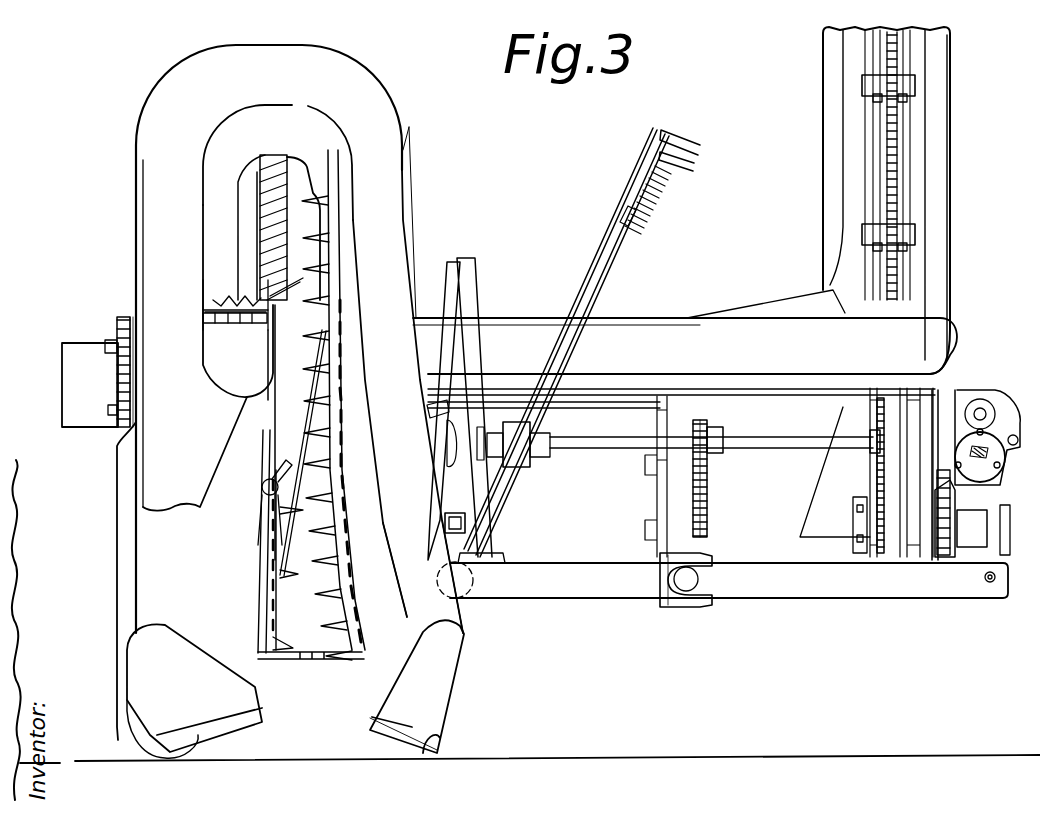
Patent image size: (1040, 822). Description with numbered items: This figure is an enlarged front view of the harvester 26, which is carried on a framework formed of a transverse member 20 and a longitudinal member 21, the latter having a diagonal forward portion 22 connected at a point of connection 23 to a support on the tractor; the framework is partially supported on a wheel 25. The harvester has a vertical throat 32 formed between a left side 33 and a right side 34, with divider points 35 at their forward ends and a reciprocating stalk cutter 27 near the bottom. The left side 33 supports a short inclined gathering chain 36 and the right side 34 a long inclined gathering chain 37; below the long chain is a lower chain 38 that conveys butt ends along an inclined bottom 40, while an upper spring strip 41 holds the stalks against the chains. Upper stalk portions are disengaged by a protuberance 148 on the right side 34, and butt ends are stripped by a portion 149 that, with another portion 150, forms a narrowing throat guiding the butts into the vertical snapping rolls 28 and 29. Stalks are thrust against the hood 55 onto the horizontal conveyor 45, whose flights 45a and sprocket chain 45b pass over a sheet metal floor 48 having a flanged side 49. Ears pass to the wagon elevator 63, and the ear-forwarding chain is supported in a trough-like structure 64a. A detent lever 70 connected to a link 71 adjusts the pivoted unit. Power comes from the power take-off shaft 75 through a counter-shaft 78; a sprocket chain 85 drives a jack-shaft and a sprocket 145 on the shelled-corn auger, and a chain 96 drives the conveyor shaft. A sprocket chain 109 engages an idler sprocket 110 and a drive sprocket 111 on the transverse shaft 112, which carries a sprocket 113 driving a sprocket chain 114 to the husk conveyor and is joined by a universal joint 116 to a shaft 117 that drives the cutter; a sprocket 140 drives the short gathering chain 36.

The transverse member 20 is at (819, 586).
The longitudinal member 21 is at (474, 580).
The diagonal forward portion 22 is at (598, 590).
The point of connection 23 is at (690, 596).
The wheel 25 is at (122, 482).
The harvester 26 is at (399, 240).
The reciprocating stalk cutter 27 is at (318, 651).
The snapping roll 28 is at (243, 250).
The snapping roll 29 is at (290, 262).
The vertical throat 32 is at (307, 683).
The left side 33 is at (178, 565).
The right side 34 is at (403, 630).
The divider points 35 is at (420, 698).
The short inclined gathering chain 36 is at (270, 594).
The long inclined gathering chain 37 is at (326, 351).
The chain 38 is at (325, 570).
The inclined bottom 40 is at (292, 410).
The upper spring strip 41 is at (303, 450).
The horizontal conveyor 45 is at (227, 292).
The flights 45a is at (210, 310).
The sprocket chain 45b is at (212, 322).
The sheet metal floor 48 is at (210, 327).
The flanged side 49 is at (274, 311).
The hood 55 is at (322, 128).
The wagon elevator 63 is at (948, 184).
The trough-like structure 64a is at (64, 413).
The detent lever 70 is at (603, 248).
The link 71 is at (468, 514).
The power take-off shaft 75 is at (985, 478).
The counter-shaft 78 is at (980, 412).
The sprocket chain 85 is at (955, 484).
The chain 96 is at (118, 372).
The sprocket chain 109 is at (872, 478).
The idler sprocket 110 is at (880, 555).
The drive sprocket 111 is at (870, 400).
The transverse shaft 112 is at (595, 447).
The sprocket 113 is at (706, 422).
The sprocket chain 114 is at (710, 489).
The universal joint 116 is at (528, 470).
The shaft 117 is at (462, 446).
The sprocket 140 is at (268, 478).
The sprocket 145 is at (960, 546).
The protuberance 148 is at (318, 193).
The portion of the side 149 is at (322, 232).
The other side of the narrowing throat 150 is at (230, 240).